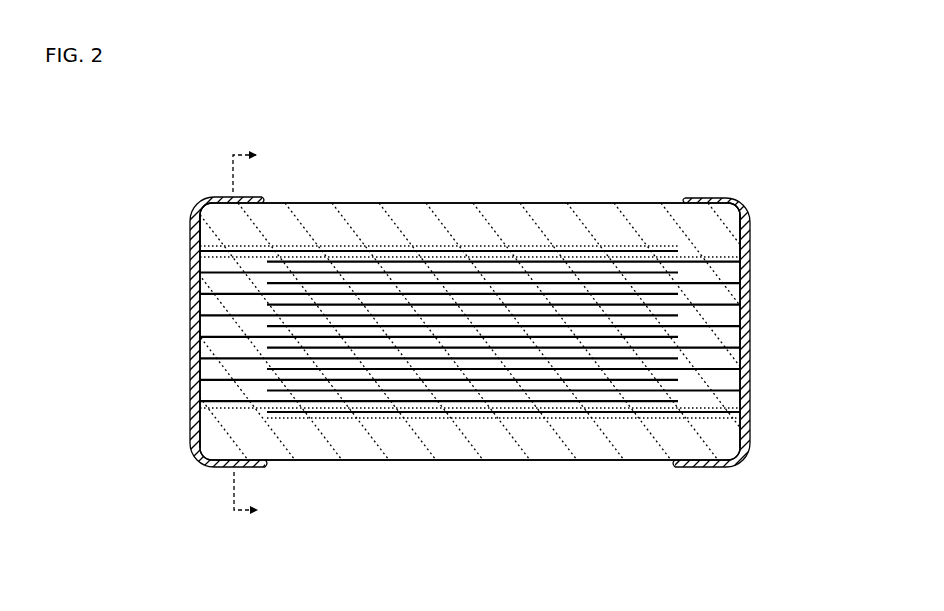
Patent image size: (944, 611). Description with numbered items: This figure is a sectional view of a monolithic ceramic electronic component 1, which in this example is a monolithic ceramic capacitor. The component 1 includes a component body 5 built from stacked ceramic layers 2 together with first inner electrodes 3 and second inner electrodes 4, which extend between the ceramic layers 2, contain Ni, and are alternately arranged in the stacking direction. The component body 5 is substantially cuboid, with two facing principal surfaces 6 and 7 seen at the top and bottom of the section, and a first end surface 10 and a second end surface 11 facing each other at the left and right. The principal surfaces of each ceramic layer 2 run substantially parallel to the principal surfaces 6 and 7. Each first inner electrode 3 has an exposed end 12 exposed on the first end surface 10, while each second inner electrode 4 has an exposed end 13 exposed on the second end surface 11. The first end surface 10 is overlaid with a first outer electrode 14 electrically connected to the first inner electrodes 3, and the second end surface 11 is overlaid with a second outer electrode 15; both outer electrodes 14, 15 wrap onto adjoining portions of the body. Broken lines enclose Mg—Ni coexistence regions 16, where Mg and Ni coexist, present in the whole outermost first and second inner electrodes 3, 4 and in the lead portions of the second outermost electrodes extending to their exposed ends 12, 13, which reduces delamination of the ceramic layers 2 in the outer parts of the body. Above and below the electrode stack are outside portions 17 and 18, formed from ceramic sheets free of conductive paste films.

The monolithic ceramic electronic component 1 is at (320, 106).
The ceramic layers 2 is at (520, 277).
The first inner electrodes 3 is at (380, 270).
The second inner electrodes 4 is at (596, 277).
The component body 5 is at (633, 198).
The principal surface 6 is at (438, 200).
The principal surface 7 is at (510, 463).
The first end surface 10 is at (190, 325).
The second end surface 11 is at (748, 310).
The exposed end 12 is at (215, 246).
The exposed end 13 is at (735, 260).
The first outer electrode 14 is at (188, 236).
The second outer electrode 15 is at (755, 361).
The Mg—Ni coexistence regions 16 is at (696, 257).
The outside portion 17 is at (757, 200).
The outside portion 18 is at (758, 413).